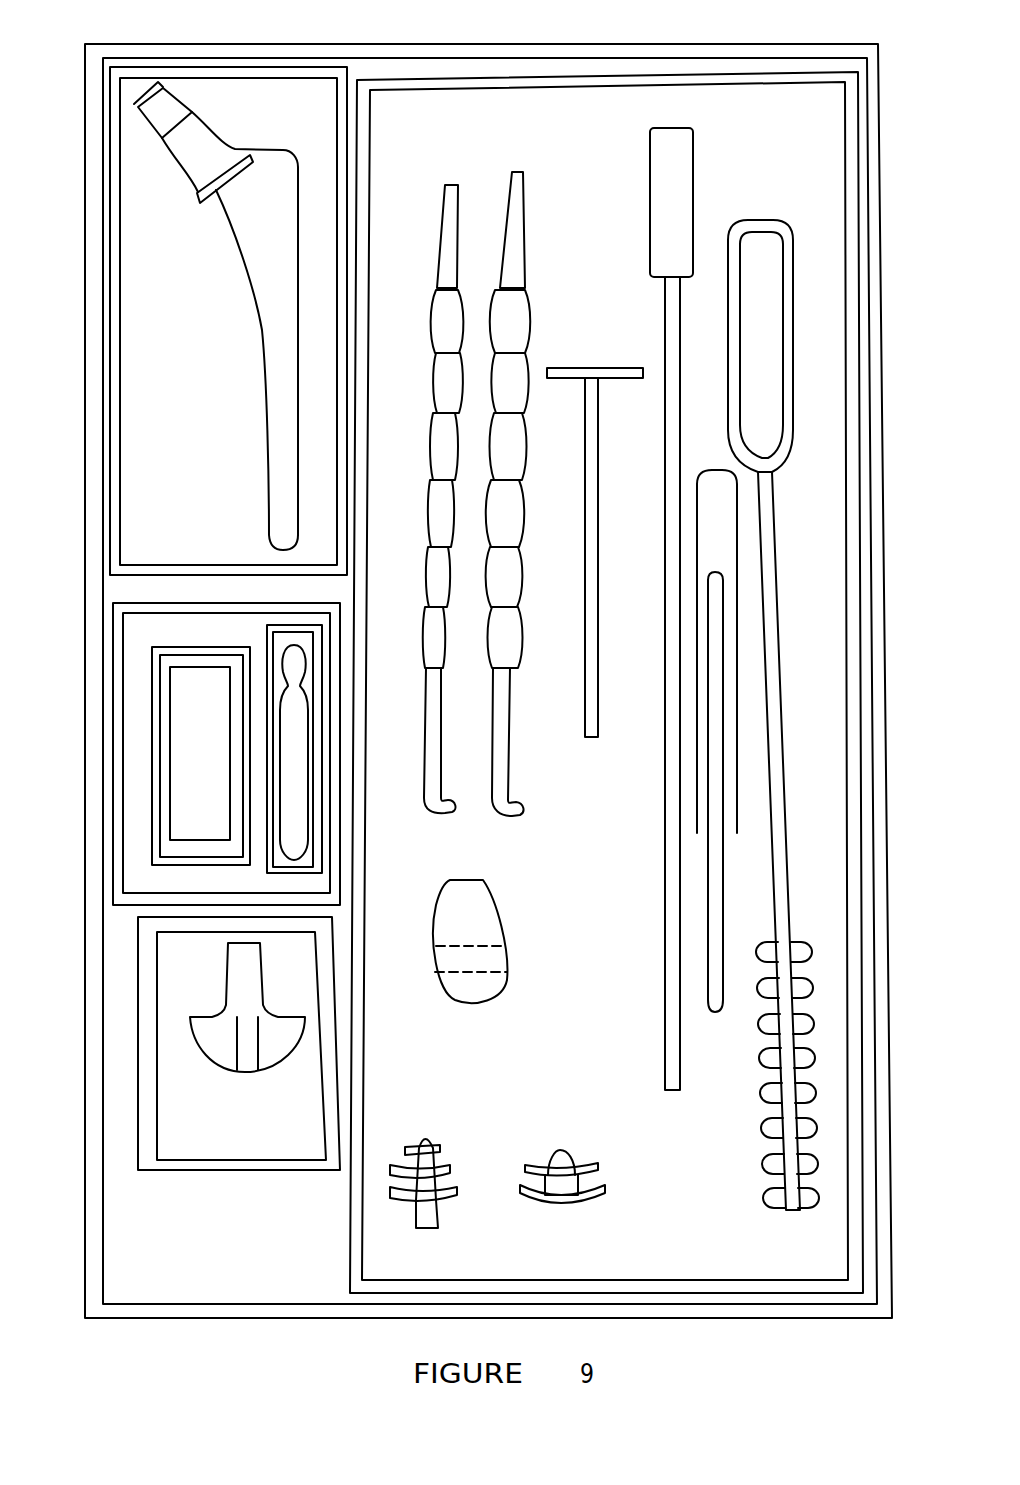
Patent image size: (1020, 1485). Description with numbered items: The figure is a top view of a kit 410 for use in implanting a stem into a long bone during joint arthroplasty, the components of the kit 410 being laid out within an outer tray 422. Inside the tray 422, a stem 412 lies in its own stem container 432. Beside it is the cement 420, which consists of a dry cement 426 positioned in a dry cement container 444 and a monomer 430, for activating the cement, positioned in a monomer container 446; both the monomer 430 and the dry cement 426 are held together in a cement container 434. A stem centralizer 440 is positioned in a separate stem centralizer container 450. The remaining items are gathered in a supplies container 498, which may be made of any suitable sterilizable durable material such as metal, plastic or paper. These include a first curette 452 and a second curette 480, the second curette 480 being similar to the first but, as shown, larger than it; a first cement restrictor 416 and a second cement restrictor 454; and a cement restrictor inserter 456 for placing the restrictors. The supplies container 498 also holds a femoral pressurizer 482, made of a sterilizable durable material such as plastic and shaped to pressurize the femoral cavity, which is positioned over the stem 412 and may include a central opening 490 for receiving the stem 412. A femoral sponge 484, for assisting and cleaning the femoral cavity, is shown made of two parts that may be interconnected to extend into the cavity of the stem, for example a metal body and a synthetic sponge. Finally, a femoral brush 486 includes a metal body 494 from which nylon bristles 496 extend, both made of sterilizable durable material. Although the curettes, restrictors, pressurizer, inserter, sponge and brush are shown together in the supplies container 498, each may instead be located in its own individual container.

The kit 410 is at (70, 212).
The stem 412 is at (208, 128).
The first cement restrictor 416 is at (572, 1153).
The cement 420 is at (159, 597).
The tray 422 is at (641, 44).
The dry cement 426 is at (200, 753).
The monomer 430 is at (295, 752).
The stem container 432 is at (124, 362).
The cement container 434 is at (262, 596).
The stem centralizer 440 is at (218, 1070).
The dry cement container 444 is at (172, 648).
The monomer container 446 is at (260, 857).
The stem centralizer container 450 is at (224, 1170).
The first curette 452 is at (442, 212).
The second cement restrictor 454 is at (427, 1140).
The cement restrictor inserter 456 is at (598, 712).
The second curette 480 is at (508, 198).
The femoral pressurizer 482 is at (500, 915).
The femoral sponge 484 is at (690, 280).
The femoral brush 486 is at (750, 222).
The central opening 490 is at (505, 966).
The metal body 494 is at (780, 458).
The nylon bristles 496 is at (802, 942).
The supplies container 498 is at (400, 90).